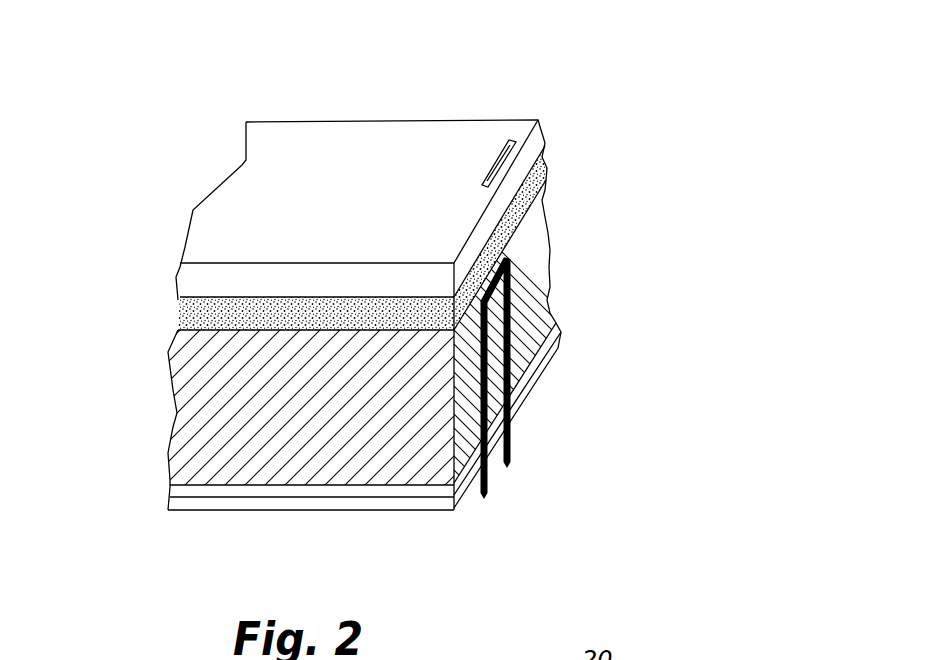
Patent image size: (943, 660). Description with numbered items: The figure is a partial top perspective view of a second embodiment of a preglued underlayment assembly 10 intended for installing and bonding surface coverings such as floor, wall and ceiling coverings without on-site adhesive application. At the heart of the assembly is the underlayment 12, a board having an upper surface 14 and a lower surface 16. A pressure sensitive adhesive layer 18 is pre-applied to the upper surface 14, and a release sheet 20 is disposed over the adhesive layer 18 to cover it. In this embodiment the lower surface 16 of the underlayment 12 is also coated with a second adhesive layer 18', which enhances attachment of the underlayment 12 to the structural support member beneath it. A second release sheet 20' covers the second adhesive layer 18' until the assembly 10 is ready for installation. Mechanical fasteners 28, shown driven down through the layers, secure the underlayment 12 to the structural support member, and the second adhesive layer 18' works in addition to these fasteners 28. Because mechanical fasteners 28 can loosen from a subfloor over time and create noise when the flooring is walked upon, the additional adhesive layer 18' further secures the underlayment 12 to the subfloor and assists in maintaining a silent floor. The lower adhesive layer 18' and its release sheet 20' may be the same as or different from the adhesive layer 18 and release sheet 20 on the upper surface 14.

The preglued underlayment assembly 10 is at (608, 102).
The underlayment 12 is at (495, 372).
The upper surface 14 is at (547, 189).
The lower surface 16 is at (403, 486).
The pressure sensitive adhesive layer 18 is at (273, 320).
The second adhesive layer 18' is at (323, 423).
The release sheet 20 is at (360, 170).
The second release sheet 20' is at (364, 460).
The mechanical fasteners 28 is at (512, 450).